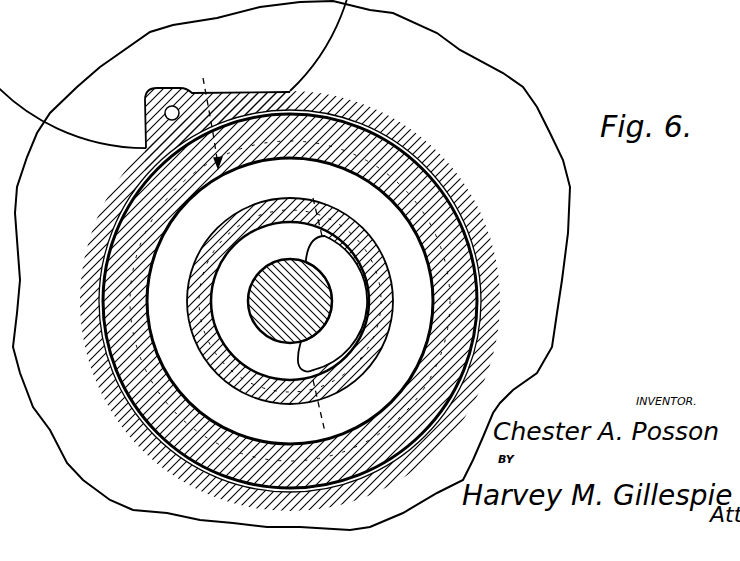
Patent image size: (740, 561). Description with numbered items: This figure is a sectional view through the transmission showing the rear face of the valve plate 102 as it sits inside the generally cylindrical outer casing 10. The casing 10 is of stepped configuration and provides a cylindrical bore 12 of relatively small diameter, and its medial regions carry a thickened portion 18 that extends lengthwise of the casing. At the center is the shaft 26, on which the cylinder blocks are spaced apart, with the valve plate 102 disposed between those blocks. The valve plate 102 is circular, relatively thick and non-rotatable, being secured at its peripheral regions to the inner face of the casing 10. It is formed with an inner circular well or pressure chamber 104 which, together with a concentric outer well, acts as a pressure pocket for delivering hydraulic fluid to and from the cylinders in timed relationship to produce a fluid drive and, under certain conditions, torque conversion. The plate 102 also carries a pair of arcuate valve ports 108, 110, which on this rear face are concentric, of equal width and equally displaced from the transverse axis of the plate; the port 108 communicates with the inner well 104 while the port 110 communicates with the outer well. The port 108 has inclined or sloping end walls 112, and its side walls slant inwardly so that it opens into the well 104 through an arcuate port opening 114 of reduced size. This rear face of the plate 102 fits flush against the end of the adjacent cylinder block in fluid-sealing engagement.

The outer casing 10 is at (115, 70).
The cylindrical bore 12 is at (442, 197).
The thickened portion 18 is at (145, 110).
The shaft 26 is at (290, 262).
The valve plate 102 is at (337, 127).
The inner circular well 104 is at (218, 288).
The arcuate valve port 108 is at (416, 140).
The arcuate valve port 110 is at (275, 184).
The inclined end walls 112 is at (312, 393).
The arcuate port opening 114 is at (298, 357).